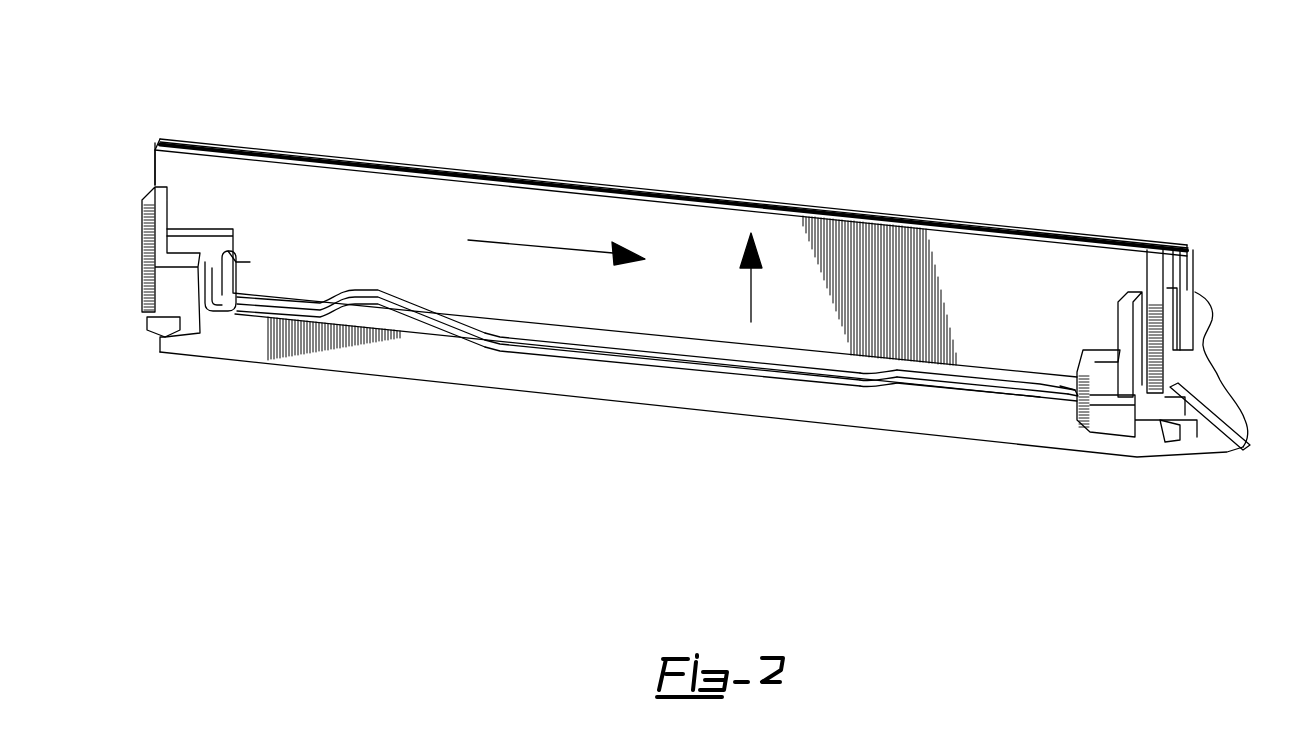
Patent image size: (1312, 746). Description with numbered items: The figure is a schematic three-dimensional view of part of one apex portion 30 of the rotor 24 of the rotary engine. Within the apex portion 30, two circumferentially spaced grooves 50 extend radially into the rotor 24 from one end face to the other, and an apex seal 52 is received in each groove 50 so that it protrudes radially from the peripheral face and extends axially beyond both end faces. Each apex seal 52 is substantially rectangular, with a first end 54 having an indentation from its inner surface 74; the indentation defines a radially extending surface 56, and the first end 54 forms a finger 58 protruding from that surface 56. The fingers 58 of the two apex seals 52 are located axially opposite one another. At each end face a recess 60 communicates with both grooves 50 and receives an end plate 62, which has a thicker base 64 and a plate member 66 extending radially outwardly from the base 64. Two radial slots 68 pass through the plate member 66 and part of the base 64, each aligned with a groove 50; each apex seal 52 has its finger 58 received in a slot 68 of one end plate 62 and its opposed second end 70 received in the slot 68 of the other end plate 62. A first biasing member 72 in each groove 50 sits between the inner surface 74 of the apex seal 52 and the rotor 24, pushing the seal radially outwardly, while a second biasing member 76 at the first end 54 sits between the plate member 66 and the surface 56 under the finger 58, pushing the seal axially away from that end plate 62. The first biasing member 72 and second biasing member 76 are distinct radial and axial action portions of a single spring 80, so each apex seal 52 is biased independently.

The rotor 24 is at (683, 395).
The apex portion 30 is at (1240, 306).
The groove 50 is at (1014, 400).
The apex seal 52 is at (1128, 245).
The first end 54 is at (138, 161).
The radially extending surface 56 is at (224, 318).
The finger 58 is at (187, 170).
The recess 60 is at (162, 355).
The end plate 62 is at (128, 308).
The base 64 is at (1112, 415).
The plate member 66 is at (1123, 318).
The radial slot 68 is at (1183, 290).
The second end 70 is at (208, 143).
The first biasing member 72 is at (497, 343).
The inner surface 74 is at (320, 297).
The second biasing member 76 is at (232, 262).
The spring 80 is at (773, 377).